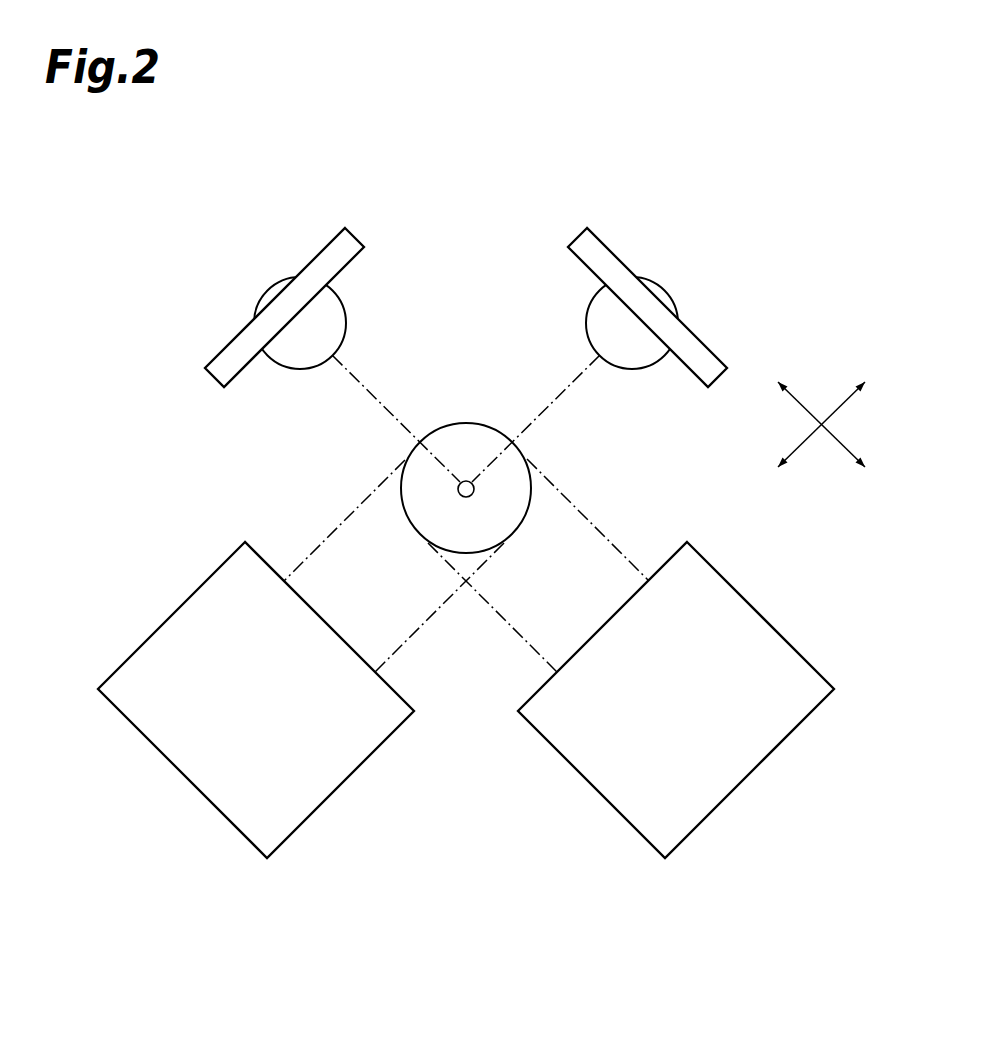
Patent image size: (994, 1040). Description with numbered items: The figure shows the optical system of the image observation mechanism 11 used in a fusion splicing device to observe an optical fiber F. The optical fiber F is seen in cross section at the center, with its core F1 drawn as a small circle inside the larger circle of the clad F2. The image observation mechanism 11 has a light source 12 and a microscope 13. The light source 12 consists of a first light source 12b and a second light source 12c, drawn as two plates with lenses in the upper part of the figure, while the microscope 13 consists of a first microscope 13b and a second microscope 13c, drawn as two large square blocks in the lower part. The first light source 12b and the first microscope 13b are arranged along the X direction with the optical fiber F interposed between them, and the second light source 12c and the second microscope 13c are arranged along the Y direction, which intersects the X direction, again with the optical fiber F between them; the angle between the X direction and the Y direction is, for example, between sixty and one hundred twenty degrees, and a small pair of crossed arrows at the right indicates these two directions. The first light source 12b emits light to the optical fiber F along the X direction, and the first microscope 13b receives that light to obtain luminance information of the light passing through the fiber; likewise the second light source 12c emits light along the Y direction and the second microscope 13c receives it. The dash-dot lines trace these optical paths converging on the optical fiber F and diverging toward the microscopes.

The image observation mechanism 11 is at (505, 202).
The light source 12 is at (466, 307).
The first light source 12b is at (655, 298).
The second light source 12c is at (277, 298).
The microscope 13 is at (473, 700).
The first microscope 13b is at (182, 603).
The second microscope 13c is at (750, 603).
The optical fiber F is at (399, 451).
The core F1 is at (458, 492).
The clad F2 is at (430, 518).
The X direction X is at (840, 408).
The Y direction Y is at (800, 403).